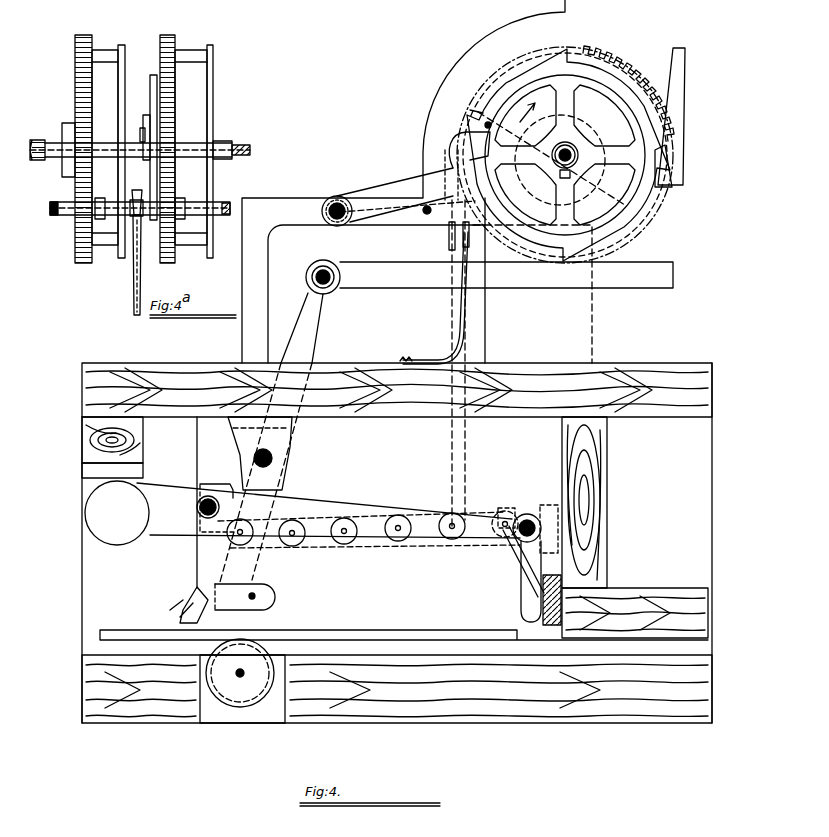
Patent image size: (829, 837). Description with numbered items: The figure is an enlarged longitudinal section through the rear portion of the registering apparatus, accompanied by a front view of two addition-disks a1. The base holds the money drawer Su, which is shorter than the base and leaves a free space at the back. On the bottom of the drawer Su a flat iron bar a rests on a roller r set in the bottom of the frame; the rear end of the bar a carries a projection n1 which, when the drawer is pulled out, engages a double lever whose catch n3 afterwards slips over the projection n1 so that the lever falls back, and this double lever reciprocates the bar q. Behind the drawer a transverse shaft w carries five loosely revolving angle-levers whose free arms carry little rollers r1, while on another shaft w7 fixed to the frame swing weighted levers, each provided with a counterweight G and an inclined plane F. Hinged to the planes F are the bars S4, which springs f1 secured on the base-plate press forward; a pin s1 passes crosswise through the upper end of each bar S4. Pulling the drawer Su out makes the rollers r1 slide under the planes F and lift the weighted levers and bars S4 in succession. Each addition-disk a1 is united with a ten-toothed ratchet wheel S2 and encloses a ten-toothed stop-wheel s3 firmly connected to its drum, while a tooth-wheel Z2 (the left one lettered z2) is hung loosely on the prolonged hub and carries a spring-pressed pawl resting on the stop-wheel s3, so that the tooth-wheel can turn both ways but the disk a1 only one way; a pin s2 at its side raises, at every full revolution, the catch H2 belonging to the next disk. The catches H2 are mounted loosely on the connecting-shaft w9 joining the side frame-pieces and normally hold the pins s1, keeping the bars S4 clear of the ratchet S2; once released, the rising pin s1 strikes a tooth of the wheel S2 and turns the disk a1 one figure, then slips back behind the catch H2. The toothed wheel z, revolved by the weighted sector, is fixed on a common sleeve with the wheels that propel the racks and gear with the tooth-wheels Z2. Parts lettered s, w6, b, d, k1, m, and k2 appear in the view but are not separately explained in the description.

In FIG. 4A, the ratchet wheel z2 is at (85, 46).
In FIG. 4, the ratchet wheel z2 is at (574, 150).
In FIG. 4A, the tooth-wheel Z2 is at (161, 46).
In FIG. 4, the tooth-wheel Z2 is at (600, 66).
In FIG. 4A, the addition-disk a1 is at (186, 56).
In FIG. 4, the addition-disk a1 is at (650, 172).
In FIG. 4A, the pawl s is at (123, 104).
In FIG. 4, the pawl s is at (470, 195).
In FIG. 4A, the wheel S2 is at (210, 100).
In FIG. 4, the wheel S2 is at (483, 113).
In FIG. 4A, the pin s2 is at (146, 120).
In FIG. 4, the pin s2 is at (510, 115).
In FIG. 4A, the stop-wheel s3 is at (153, 80).
In FIG. 4A, the pin s1 is at (136, 198).
In FIG. 4A, the shaft w6 is at (242, 148).
In FIG. 4A, the connecting-shaft w9 is at (233, 207).
In FIG. 4, the connecting-shaft w9 is at (338, 203).
In FIG. 4A, the bar S4 is at (142, 222).
In FIG. 4, the bar S4 is at (478, 319).
In FIG. 4A, the spring f1 is at (133, 290).
In FIG. 4, the spring f1 is at (445, 349).
In FIG. 4, the catch H2 is at (408, 187).
In FIG. 4, the bar q is at (546, 282).
In FIG. 4, the lever b is at (303, 354).
In FIG. 4, the pin d is at (274, 458).
In FIG. 4, the shaft w7 is at (209, 498).
In FIG. 4, the rod k1 is at (330, 502).
In FIG. 4, the counterweight G is at (130, 538).
In FIG. 4, the roller r1 is at (346, 545).
In FIG. 4, the shaft w is at (530, 518).
In FIG. 4, the plane F is at (518, 562).
In FIG. 4, the wheel z is at (535, 611).
In FIG. 4, the drawer Su is at (598, 574).
In FIG. 4, the flat iron bar a is at (492, 634).
In FIG. 4, the roller r is at (248, 652).
In FIG. 4, the projection n1 is at (170, 609).
In FIG. 4, the catch n3 is at (205, 612).
In FIG. 4, the stop m is at (405, 352).
In FIG. 4, the lever plate k2 is at (680, 97).